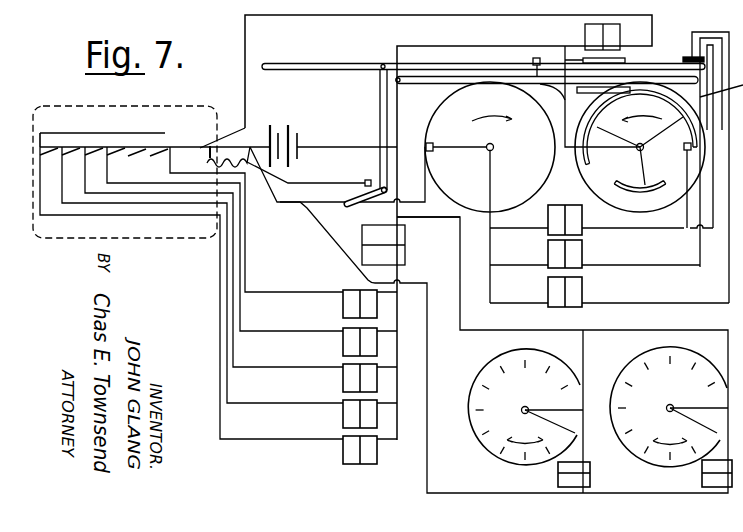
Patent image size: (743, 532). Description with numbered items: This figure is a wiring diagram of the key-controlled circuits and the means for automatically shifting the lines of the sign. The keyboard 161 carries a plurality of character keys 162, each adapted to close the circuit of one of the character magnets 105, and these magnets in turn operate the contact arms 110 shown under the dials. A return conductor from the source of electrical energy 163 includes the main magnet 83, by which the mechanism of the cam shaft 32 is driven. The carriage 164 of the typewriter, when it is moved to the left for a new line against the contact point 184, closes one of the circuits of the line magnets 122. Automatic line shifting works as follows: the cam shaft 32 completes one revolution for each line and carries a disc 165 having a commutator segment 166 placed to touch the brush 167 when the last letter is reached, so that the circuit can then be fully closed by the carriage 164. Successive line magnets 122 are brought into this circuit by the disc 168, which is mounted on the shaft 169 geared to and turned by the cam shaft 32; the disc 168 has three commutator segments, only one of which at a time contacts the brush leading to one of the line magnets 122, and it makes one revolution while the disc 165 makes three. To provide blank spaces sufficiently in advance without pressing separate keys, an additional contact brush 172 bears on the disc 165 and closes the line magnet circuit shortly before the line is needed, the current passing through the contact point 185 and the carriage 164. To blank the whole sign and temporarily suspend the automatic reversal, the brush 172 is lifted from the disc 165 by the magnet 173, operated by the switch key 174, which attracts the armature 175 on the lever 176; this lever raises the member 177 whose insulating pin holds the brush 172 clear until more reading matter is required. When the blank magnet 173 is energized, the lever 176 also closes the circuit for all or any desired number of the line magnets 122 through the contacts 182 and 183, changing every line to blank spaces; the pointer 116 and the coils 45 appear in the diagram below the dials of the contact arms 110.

The keyboard 161 is at (152, 104).
The switch key 174 is at (47, 132).
The contact point 184 is at (148, 147).
The carriage 164 is at (200, 144).
The character keys 162 is at (113, 155).
The contact point 185 is at (215, 145).
The source of electrical energy 163 is at (296, 127).
The lever 176 is at (333, 64).
The contact brush 172 is at (443, 90).
The contact 183 is at (373, 182).
The main magnet 83 is at (360, 238).
The character magnets 105 is at (343, 308).
The member (lever) 177 is at (547, 82).
The disc 165 is at (490, 147).
The commutator segment 166 is at (440, 150).
The cam shaft 32 is at (494, 149).
The brush 167 is at (440, 192).
The magnet 173 is at (585, 33).
The armature 175 is at (617, 62).
The contact 182 is at (688, 52).
The disc 168 is at (640, 155).
The shaft 169 is at (642, 149).
The line magnets 122 is at (548, 218).
The contact arms 110 is at (487, 388).
The pointer 116 is at (548, 425).
The electromagnet coils 45 is at (590, 473).